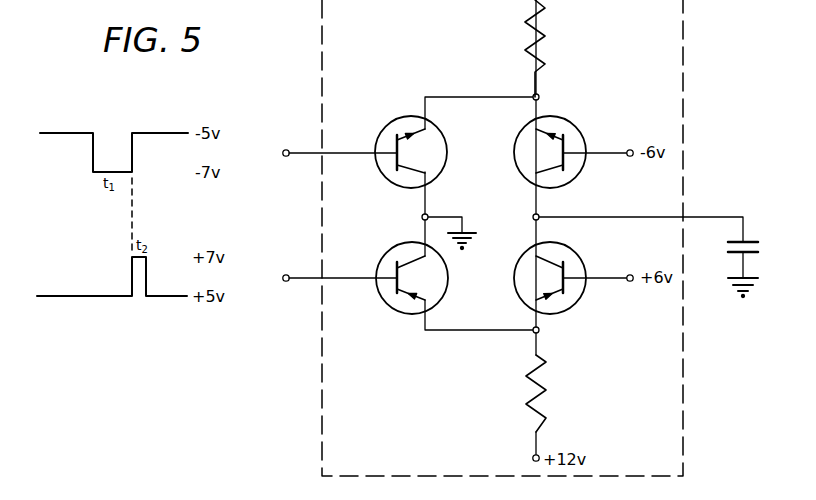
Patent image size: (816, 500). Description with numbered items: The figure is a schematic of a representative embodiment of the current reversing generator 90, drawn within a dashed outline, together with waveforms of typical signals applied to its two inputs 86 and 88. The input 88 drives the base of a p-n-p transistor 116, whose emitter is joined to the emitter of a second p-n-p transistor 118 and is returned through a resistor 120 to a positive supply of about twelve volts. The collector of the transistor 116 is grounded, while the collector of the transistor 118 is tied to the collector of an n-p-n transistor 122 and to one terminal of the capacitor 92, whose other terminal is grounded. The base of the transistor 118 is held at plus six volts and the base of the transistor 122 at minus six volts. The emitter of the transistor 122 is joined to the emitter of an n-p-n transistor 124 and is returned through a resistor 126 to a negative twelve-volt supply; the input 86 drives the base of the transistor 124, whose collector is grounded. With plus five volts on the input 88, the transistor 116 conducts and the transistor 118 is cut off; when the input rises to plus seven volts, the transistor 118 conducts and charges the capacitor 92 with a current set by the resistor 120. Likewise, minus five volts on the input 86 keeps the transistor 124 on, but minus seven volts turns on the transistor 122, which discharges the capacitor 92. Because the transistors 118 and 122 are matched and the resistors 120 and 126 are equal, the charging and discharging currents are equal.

The input 86 is at (284, 150).
The input 88 is at (284, 275).
The current reversing generator 90 is at (685, 43).
The capacitor 92 is at (757, 244).
The transistor 116 is at (399, 313).
The transistor 118 is at (559, 314).
The resistor 120 is at (541, 418).
The transistor 122 is at (579, 121).
The transistor 124 is at (393, 117).
The resistor 126 is at (546, 41).